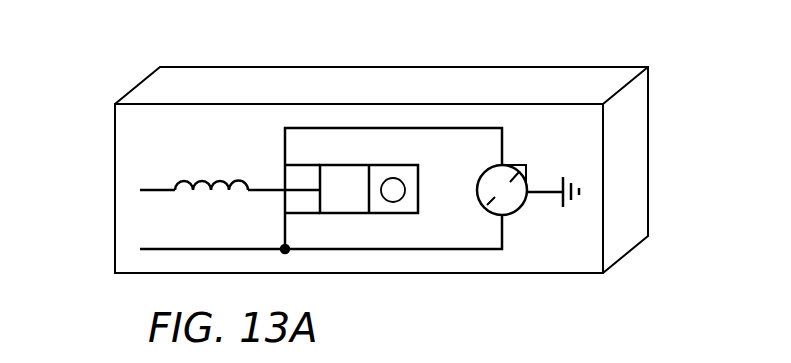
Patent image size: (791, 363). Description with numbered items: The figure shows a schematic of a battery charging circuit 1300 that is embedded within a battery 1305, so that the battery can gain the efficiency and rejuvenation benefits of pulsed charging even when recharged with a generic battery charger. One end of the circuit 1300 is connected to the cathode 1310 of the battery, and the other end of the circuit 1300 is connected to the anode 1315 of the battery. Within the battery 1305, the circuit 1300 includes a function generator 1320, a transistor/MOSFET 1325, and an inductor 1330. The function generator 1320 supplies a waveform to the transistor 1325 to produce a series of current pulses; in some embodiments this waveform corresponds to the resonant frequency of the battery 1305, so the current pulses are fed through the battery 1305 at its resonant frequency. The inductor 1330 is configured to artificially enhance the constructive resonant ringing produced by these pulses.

The circuit 1300 is at (381, 128).
The battery 1305 is at (643, 165).
The cathode 1310 is at (128, 181).
The anode 1315 is at (128, 243).
The function generator 1320 is at (511, 214).
The transistor/MOSFET 1325 is at (345, 214).
The inductor 1330 is at (230, 178).